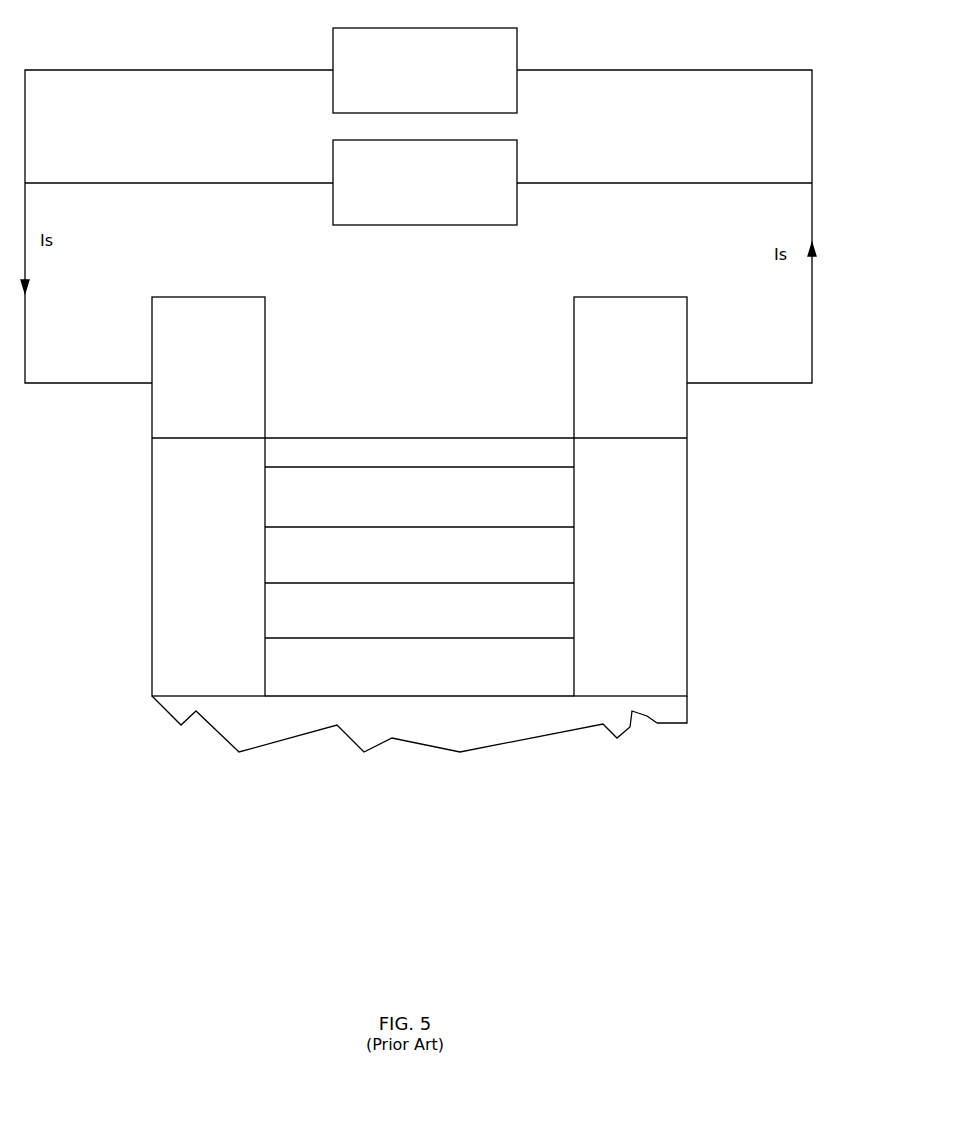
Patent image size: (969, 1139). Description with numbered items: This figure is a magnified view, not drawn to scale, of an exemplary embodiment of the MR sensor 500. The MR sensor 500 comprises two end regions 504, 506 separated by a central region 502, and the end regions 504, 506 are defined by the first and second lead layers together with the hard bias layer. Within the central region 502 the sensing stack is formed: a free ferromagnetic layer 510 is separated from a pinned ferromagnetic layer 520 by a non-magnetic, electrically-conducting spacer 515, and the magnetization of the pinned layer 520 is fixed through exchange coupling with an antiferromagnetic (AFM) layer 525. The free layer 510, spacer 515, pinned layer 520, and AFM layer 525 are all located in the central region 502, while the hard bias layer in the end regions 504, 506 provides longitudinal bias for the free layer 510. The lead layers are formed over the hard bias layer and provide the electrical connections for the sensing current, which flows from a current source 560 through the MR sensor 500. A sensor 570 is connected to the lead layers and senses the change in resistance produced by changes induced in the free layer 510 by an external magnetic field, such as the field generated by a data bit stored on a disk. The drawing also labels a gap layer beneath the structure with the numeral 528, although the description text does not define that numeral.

The MR sensor 500 is at (273, 907).
The central region 502 is at (573, 283).
The end region 504 is at (264, 283).
The end region 506 is at (685, 280).
The free layer 510 is at (548, 497).
The spacer 515 is at (560, 548).
The pinned layer 520 is at (563, 612).
The antiferromagnetic (AFM) layer 525 is at (560, 663).
The gap layer G1 528 is at (647, 718).
The current source 560 is at (333, 153).
The sensor 570 is at (517, 97).